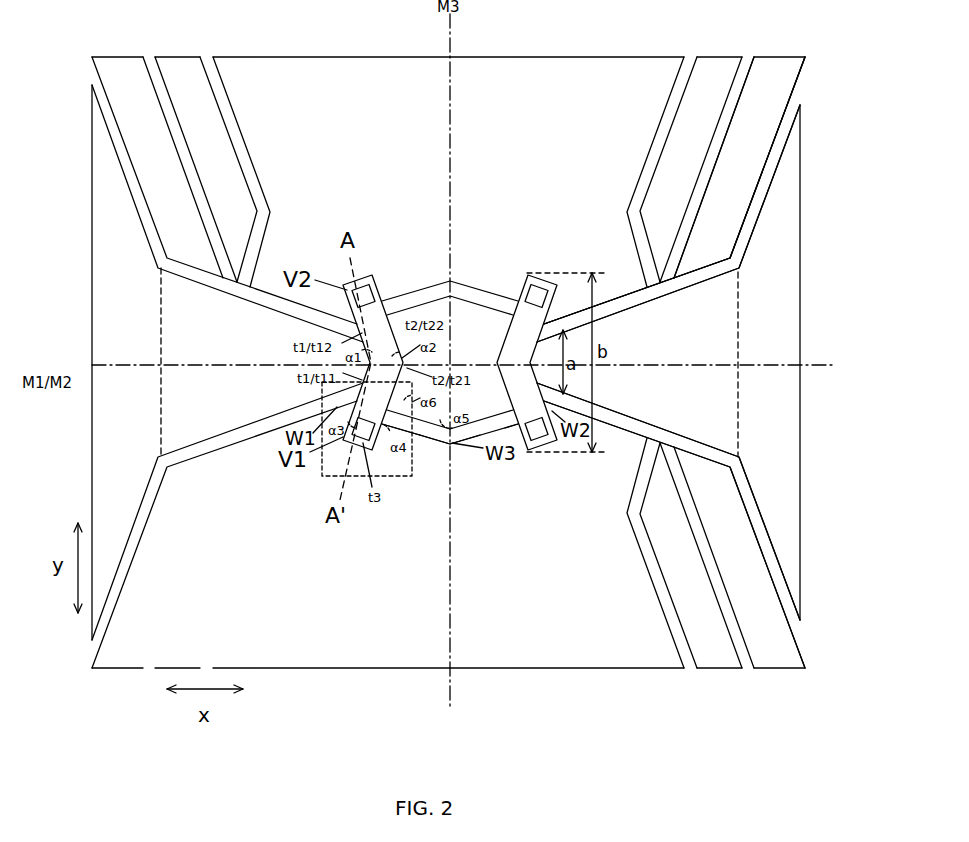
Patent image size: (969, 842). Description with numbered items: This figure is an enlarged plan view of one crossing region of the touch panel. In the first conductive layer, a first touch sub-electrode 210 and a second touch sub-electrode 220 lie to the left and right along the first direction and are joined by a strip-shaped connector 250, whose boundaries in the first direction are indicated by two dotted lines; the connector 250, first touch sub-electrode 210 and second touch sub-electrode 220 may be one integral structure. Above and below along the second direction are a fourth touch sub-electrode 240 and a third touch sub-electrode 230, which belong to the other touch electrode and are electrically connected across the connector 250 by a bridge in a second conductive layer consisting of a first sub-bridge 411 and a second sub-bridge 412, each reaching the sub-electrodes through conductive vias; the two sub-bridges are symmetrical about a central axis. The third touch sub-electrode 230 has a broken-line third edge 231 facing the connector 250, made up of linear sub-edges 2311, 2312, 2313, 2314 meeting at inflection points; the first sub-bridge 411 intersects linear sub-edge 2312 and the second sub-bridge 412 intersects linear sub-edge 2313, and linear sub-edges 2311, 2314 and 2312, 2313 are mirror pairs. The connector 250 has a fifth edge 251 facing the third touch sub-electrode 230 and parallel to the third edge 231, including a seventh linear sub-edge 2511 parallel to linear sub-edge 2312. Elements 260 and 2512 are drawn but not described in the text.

The first touch sub-electrode 210 is at (118, 362).
The second touch sub-electrode 220 is at (776, 362).
The third touch sub-electrode 230 is at (499, 500).
The fourth touch sub-electrode 240 is at (489, 237).
The connector 250 is at (637, 299).
The corner strip 260 is at (739, 143).
The first sub-bridge 411 is at (387, 341).
The second sub-bridge 412 is at (512, 341).
The third edge 231 is at (668, 501).
The linear sub-edge 2311 is at (227, 525).
The linear sub-edge 2312 is at (404, 485).
The linear sub-edge 2313 is at (532, 465).
The linear sub-edge 2314 is at (674, 534).
The fifth edge 251 is at (480, 487).
The seventh linear sub-edge 2511 is at (480, 487).
The second upper slot segment 2512 is at (671, 199).